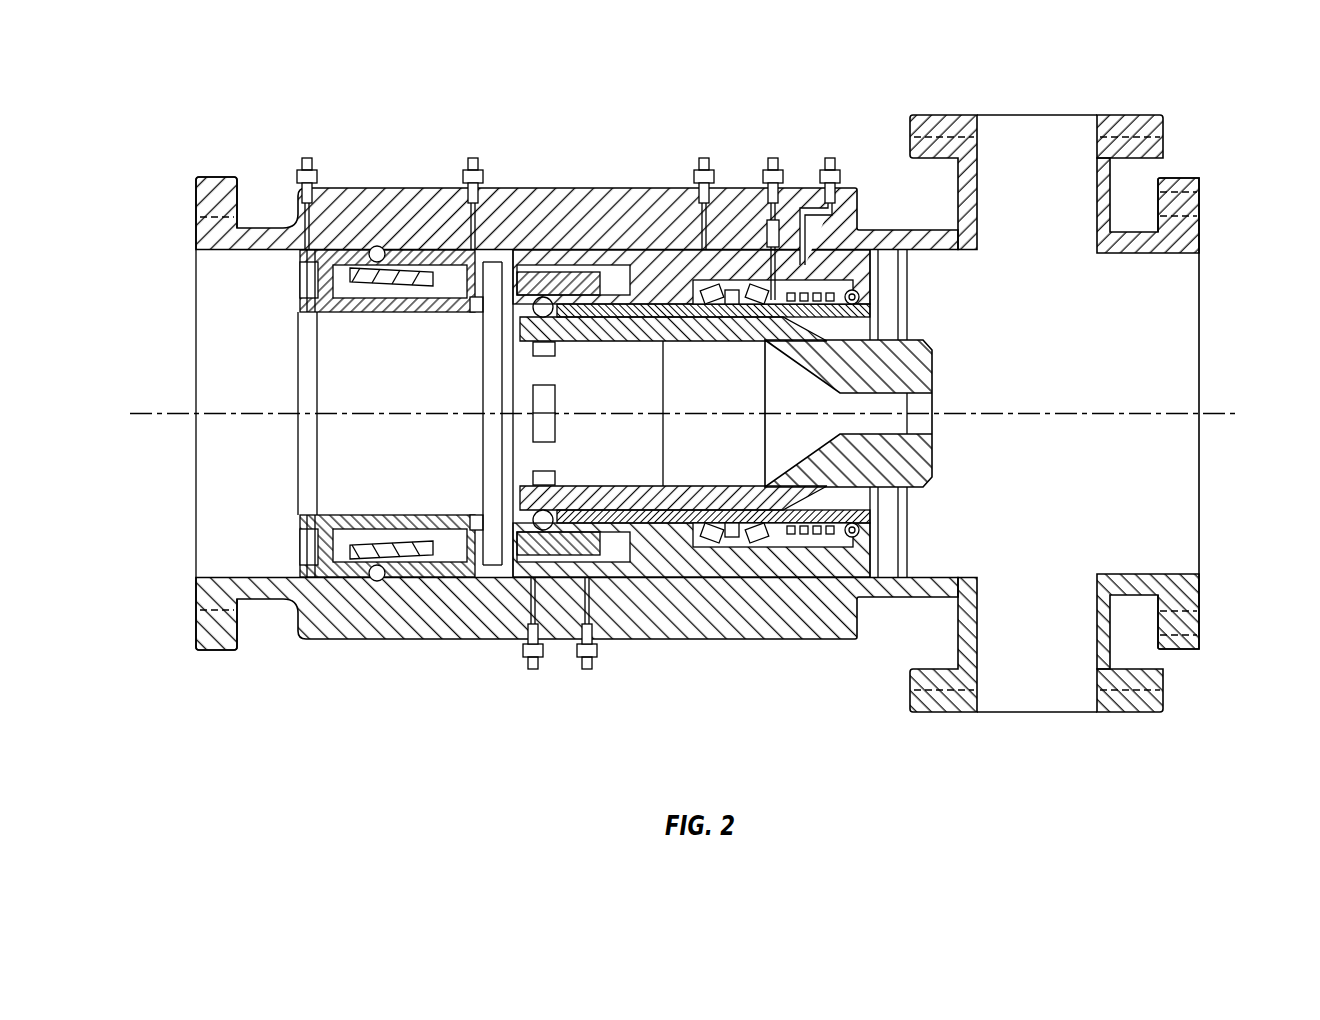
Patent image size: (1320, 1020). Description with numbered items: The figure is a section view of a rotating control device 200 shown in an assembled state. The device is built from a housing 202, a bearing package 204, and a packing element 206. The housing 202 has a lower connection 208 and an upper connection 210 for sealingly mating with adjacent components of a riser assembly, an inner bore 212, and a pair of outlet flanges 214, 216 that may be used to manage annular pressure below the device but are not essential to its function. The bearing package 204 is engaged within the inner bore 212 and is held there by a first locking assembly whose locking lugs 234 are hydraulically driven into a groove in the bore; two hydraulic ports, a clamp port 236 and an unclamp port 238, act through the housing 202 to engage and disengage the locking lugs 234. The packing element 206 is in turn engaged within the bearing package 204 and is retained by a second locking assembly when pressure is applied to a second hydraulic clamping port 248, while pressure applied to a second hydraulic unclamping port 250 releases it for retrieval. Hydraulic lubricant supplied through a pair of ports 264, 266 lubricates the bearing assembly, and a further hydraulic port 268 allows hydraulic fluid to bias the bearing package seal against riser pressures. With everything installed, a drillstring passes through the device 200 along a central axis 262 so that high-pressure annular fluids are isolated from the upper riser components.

The rotating control device 200 is at (845, 72).
The housing 202 is at (673, 628).
The bearing package 204 is at (893, 283).
The packing element 206 is at (912, 355).
The lower connection 208 is at (1201, 597).
The upper connection 210 is at (196, 218).
The inner bore 212 is at (205, 575).
The outlet flange 214 is at (1112, 716).
The outlet flange 216 is at (1116, 115).
The locking lugs 234 is at (380, 250).
The clamp port 236 is at (310, 157).
The unclamp port 238 is at (476, 157).
The second hydraulic clamping port 248 is at (532, 670).
The second hydraulic unclamping port 250 is at (590, 670).
The central axis 262 is at (1237, 413).
The port 264 is at (707, 157).
The port 266 is at (775, 157).
The hydraulic port 268 is at (833, 157).